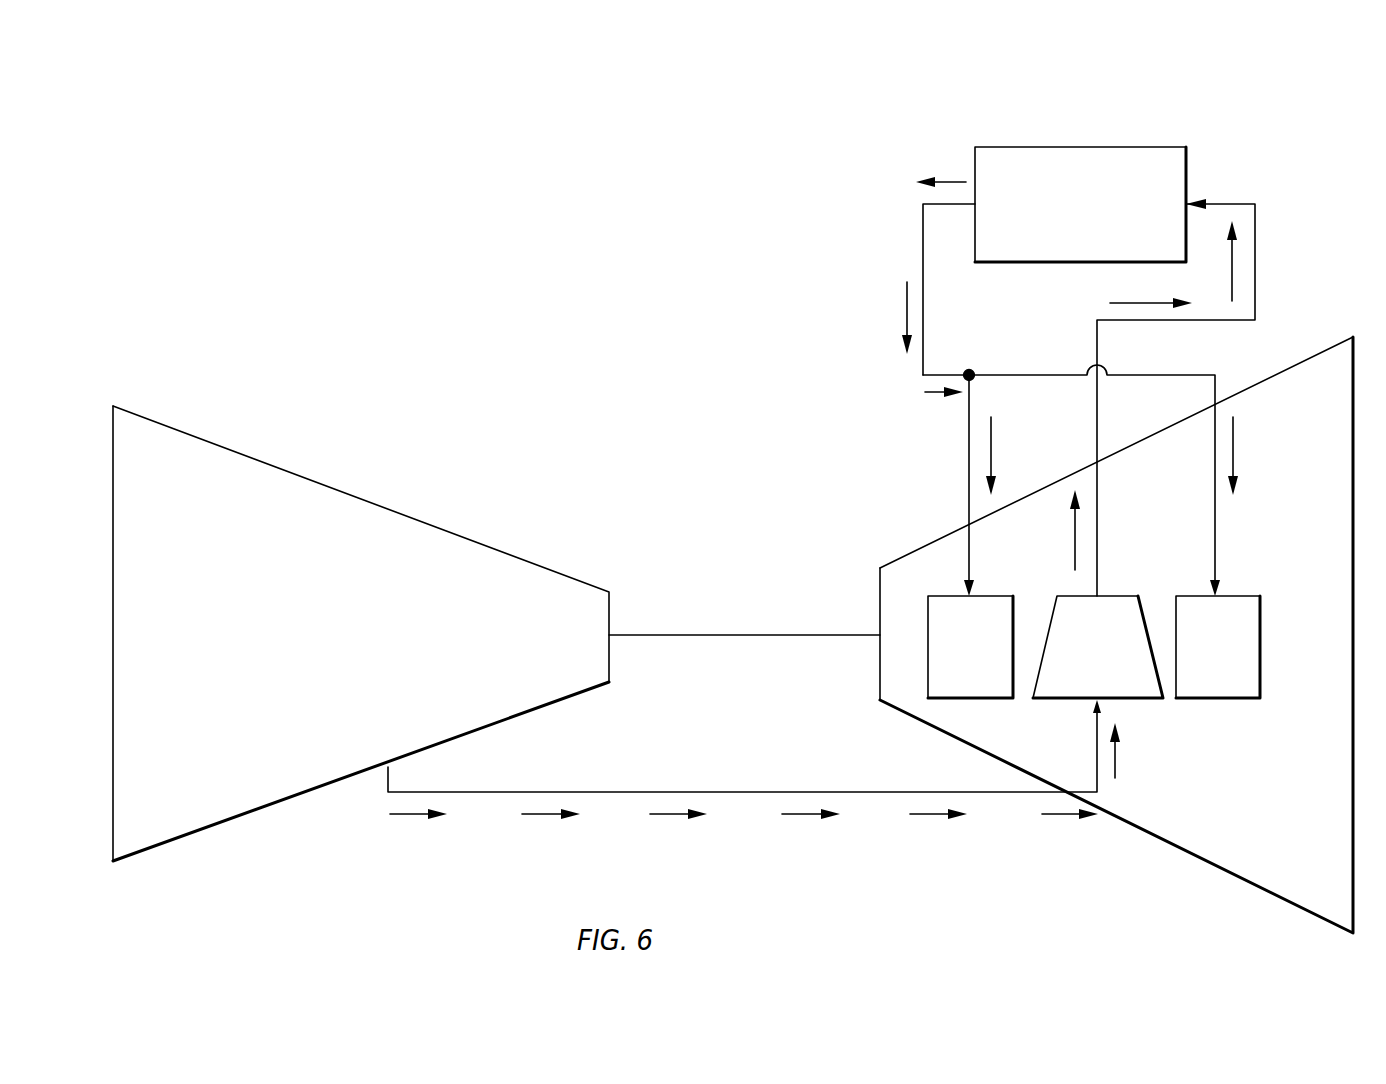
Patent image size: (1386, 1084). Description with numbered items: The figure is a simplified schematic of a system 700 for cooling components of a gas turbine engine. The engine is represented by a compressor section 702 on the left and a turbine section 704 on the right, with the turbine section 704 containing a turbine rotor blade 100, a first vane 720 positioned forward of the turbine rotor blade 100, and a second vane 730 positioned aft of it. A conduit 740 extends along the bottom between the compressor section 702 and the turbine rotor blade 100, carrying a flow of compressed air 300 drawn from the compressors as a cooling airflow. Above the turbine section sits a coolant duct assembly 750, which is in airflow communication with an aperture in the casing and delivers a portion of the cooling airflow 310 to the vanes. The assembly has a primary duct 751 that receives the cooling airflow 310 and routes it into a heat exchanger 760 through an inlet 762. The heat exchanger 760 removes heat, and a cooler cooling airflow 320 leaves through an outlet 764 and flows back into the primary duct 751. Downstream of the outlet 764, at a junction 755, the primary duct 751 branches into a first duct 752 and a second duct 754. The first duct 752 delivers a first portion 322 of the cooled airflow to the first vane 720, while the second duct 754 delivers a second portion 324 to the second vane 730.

The turbine rotor blade 100 is at (1077, 662).
The air flow 300 is at (415, 820).
The cooling airflow 310 is at (1256, 268).
The cooling airflow 320 is at (950, 182).
The first portion of the cooling airflow 322 is at (992, 460).
The second portion of the cooling airflow 324 is at (1235, 460).
The system 700 is at (884, 898).
The compressor section 702 is at (302, 657).
The turbine section 704 is at (1230, 792).
The first vane 720 is at (949, 662).
The second vane 730 is at (1197, 662).
The conduit 740 is at (752, 792).
The coolant duct assembly 750 is at (1285, 90).
The primary duct 751 is at (923, 253).
The first duct 752 is at (969, 488).
The second duct 754 is at (1040, 375).
The junction 755 is at (969, 369).
The heat exchanger 760 is at (1059, 217).
The inlet 762 is at (1192, 203).
The outlet 764 is at (976, 204).